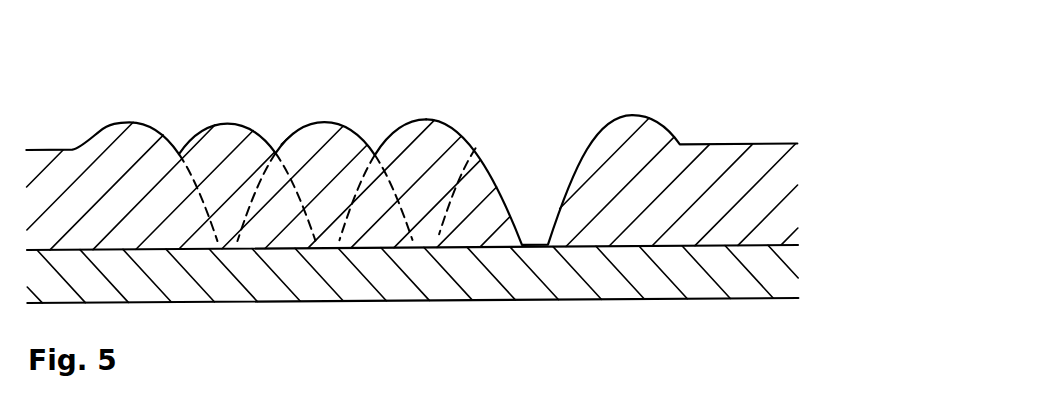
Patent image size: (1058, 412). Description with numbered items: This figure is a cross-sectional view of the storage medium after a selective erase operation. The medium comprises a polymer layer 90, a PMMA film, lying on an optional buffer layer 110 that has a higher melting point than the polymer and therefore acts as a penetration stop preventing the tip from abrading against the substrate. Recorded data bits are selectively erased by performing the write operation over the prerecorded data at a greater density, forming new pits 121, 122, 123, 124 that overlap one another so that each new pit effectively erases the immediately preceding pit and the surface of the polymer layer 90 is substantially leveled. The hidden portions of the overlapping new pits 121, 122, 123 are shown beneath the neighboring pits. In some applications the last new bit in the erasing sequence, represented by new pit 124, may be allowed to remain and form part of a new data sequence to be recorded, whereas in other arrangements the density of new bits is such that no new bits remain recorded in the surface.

The polymer layer 90 is at (778, 207).
The buffer layer 110 is at (778, 282).
The new pit 121 is at (223, 167).
The new pit 122 is at (325, 167).
The new pit 123 is at (418, 165).
The new pit 124 is at (523, 168).